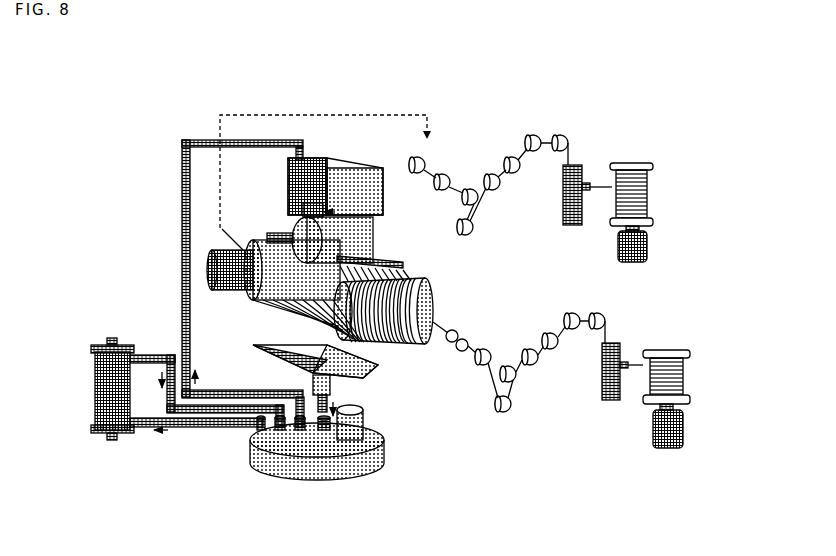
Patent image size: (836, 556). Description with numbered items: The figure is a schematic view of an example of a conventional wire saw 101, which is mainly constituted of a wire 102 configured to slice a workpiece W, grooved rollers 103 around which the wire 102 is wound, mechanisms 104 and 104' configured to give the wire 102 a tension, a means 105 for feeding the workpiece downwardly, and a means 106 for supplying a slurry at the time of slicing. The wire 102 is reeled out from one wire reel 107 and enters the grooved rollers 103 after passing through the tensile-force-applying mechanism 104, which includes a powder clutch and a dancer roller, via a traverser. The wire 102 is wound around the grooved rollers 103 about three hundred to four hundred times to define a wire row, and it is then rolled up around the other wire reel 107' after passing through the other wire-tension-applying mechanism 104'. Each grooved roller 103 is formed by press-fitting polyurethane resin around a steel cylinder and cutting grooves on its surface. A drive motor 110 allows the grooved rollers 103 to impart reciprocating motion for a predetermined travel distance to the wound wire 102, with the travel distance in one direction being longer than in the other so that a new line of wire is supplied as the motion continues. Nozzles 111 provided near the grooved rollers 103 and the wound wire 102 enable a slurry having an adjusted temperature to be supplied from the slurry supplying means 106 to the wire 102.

The wire saw 101 is at (144, 141).
The wire 102 is at (443, 323).
The grooved rollers 103 is at (432, 295).
The tensile-force-applying mechanism 104 is at (556, 404).
The wire-tension-applying mechanism 104' is at (565, 159).
The means for feeding the workpiece downwardly 105 is at (343, 193).
The means for supplying a slurry 106 is at (184, 455).
The wire reel 107 is at (685, 370).
The wire reel 107' is at (684, 206).
The drive motor 110 is at (205, 262).
The nozzles 111 is at (400, 238).
The workpiece / processing liquid W is at (313, 237).